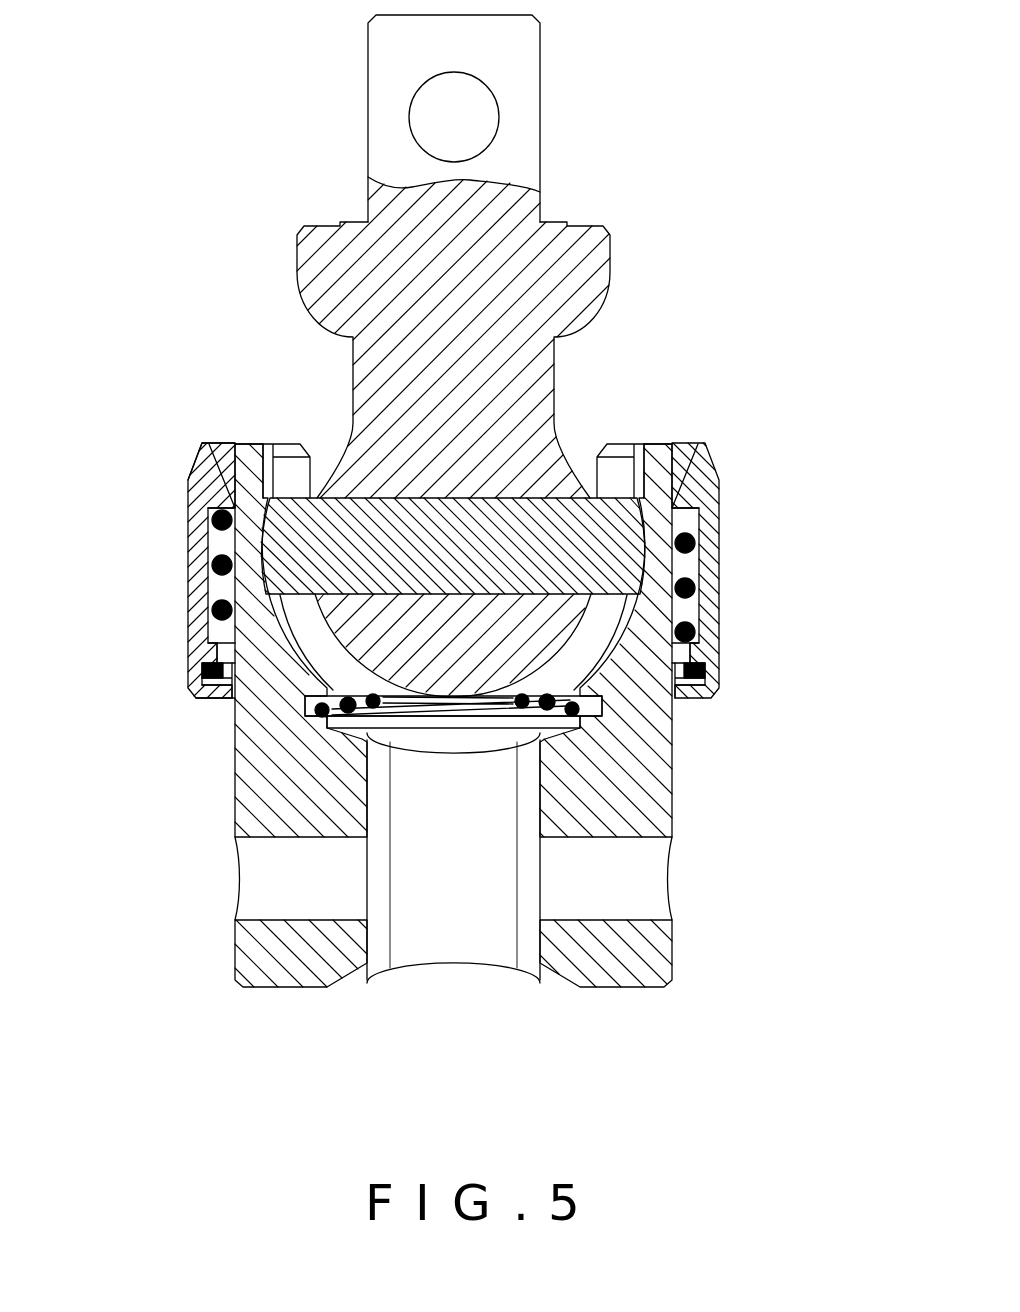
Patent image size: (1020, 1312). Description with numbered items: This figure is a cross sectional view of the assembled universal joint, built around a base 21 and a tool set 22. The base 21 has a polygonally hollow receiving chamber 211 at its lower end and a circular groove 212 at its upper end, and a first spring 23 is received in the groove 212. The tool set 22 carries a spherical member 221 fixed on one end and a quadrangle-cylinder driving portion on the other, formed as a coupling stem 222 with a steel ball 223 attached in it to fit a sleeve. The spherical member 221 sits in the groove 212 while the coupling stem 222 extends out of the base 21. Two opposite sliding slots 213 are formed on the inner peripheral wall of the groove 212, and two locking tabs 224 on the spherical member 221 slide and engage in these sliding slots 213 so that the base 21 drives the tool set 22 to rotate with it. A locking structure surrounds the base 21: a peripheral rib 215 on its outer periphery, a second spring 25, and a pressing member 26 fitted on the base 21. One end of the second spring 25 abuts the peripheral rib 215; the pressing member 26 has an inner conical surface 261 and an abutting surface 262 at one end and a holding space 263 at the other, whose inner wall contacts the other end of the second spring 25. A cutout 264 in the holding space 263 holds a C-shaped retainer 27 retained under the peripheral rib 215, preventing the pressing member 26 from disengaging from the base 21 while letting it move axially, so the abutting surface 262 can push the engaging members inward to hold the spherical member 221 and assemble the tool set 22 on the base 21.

The base 21 is at (450, 702).
The polygonally hollow receiving chamber 211 is at (455, 933).
The circular groove 212 is at (622, 468).
The sliding slots 213 is at (645, 462).
The peripheral rib 215 is at (203, 650).
The tool set 22 is at (522, 254).
The spherical member 221 is at (350, 483).
The coupling stem 222 is at (531, 116).
The steel ball 223 is at (453, 117).
The locking tabs 224 is at (603, 550).
The first spring 23 is at (605, 706).
The second spring 25 is at (213, 566).
The pressing member 26 is at (160, 559).
The inner conical surface 261 is at (222, 492).
The abutting surface 262 is at (230, 490).
The holding space 263 is at (687, 610).
The cutout 264 is at (215, 668).
The C-shaped retainer 27 is at (220, 698).